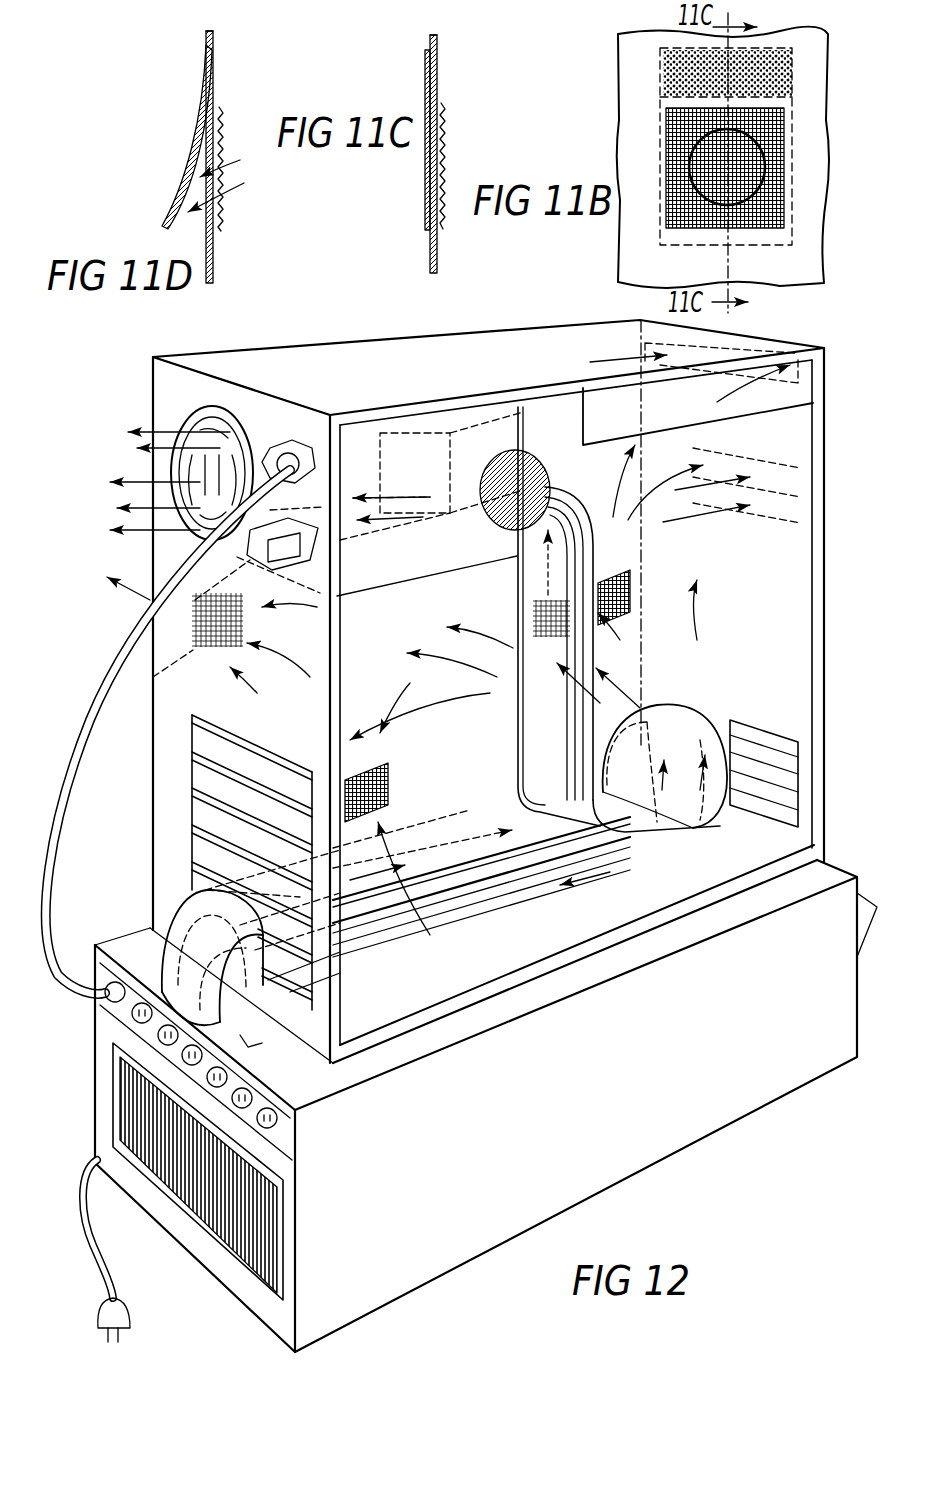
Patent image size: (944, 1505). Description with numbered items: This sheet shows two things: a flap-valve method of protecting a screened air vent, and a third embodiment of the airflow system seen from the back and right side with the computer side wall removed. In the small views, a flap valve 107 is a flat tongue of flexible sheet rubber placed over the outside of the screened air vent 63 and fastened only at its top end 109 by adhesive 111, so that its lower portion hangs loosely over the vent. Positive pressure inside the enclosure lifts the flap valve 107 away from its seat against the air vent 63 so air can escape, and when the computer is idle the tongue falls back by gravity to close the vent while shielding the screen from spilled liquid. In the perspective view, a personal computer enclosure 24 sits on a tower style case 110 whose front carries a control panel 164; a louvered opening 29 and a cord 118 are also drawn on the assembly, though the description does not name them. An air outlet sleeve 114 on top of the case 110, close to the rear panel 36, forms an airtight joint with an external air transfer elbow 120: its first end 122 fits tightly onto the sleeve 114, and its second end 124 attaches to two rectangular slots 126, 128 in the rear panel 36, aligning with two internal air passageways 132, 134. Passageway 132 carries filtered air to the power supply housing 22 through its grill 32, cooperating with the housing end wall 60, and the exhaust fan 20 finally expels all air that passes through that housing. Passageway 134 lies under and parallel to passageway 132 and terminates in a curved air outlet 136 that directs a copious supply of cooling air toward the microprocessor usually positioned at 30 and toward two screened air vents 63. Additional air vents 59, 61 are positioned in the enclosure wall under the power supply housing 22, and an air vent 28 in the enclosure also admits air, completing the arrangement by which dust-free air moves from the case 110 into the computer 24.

In FIG. 12, the exhaust fan 20 is at (233, 432).
In FIG. 12, the power supply housing cage 22 is at (423, 578).
In FIG. 12, the computer enclosure 24 is at (390, 340).
In FIG. 12, the air vent 28 is at (737, 790).
In FIG. 12, the louvered vent 29 is at (800, 733).
In FIG. 12, the microprocessor location 30 is at (553, 693).
In FIG. 12, the grill 32 is at (482, 490).
In FIG. 12, the rear panel 36 is at (160, 722).
In FIG. 12, the air vent 59 is at (386, 770).
In FIG. 12, the end wall 60 is at (583, 445).
In FIG. 12, the air vent 61 is at (153, 683).
In FIG. 11D, the screened air vent 63 is at (224, 195).
In FIG. 11C, the screened air vent 63 is at (440, 173).
In FIG. 11B, the screened air vent 63 is at (668, 212).
In FIG. 12, the screened air vent 63 is at (618, 572).
In FIG. 11D, the flap valve 107 is at (176, 192).
In FIG. 11C, the flap valve 107 is at (426, 212).
In FIG. 11B, the flap valve 107 is at (668, 148).
In FIG. 11D, the top end 109 is at (207, 52).
In FIG. 11C, the top end 109 is at (427, 63).
In FIG. 11B, the top end 109 is at (663, 82).
In FIG. 11D, the adhesive 111 is at (214, 78).
In FIG. 11C, the adhesive 111 is at (437, 78).
In FIG. 11B, the adhesive 111 is at (660, 55).
In FIG. 12, the tower style case 110 is at (173, 968).
In FIG. 12, the air outlet sleeve 114 is at (237, 1040).
In FIG. 12, the power cord 118 is at (105, 1030).
In FIG. 12, the air transfer elbow 120 is at (150, 935).
In FIG. 12, the first end 122 is at (140, 948).
In FIG. 12, the second end 124 is at (200, 893).
In FIG. 12, the rectangular slot 126 is at (300, 958).
In FIG. 12, the rectangular slot 128 is at (300, 993).
In FIG. 12, the air passageway 132 is at (518, 710).
In FIG. 12, the air passageway 134 is at (518, 878).
In FIG. 12, the curved air outlet 136 is at (688, 532).
In FIG. 12, the control panel 164 is at (870, 895).